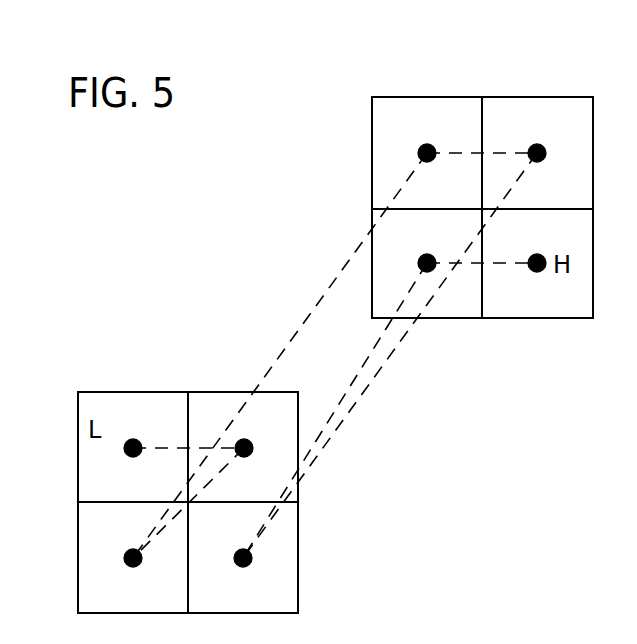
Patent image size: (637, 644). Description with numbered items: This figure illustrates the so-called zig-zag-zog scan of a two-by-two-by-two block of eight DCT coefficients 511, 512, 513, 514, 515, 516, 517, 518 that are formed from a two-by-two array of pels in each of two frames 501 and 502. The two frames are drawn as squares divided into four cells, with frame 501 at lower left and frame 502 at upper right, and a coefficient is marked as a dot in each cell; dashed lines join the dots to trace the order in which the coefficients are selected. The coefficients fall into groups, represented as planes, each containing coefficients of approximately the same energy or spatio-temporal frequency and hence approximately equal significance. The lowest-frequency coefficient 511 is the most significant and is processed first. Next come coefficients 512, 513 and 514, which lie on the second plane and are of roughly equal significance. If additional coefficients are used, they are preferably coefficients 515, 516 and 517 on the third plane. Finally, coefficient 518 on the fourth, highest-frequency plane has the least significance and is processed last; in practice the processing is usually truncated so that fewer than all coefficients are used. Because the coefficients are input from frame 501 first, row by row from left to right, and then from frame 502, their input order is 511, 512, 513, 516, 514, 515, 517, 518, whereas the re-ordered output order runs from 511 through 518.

The frame 501 is at (133, 391).
The frame 502 is at (407, 97).
The coefficient 511 is at (128, 446).
The coefficient 512 is at (244, 442).
The coefficient 513 is at (125, 558).
The coefficient 514 is at (419, 153).
The coefficient 515 is at (528, 145).
The coefficient 516 is at (250, 559).
The coefficient 517 is at (421, 267).
The coefficient 518 is at (542, 272).